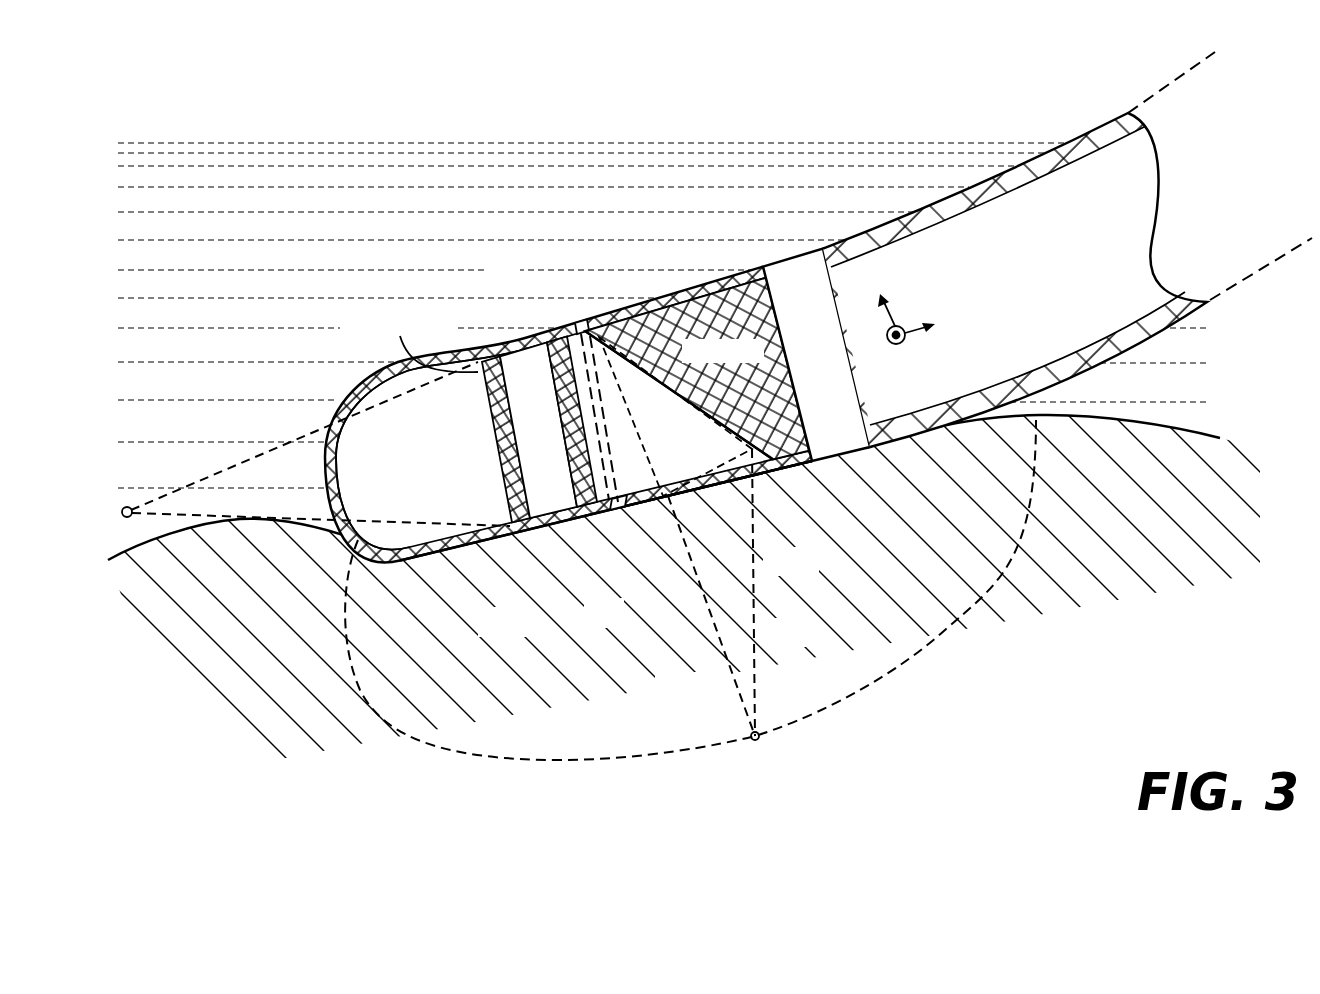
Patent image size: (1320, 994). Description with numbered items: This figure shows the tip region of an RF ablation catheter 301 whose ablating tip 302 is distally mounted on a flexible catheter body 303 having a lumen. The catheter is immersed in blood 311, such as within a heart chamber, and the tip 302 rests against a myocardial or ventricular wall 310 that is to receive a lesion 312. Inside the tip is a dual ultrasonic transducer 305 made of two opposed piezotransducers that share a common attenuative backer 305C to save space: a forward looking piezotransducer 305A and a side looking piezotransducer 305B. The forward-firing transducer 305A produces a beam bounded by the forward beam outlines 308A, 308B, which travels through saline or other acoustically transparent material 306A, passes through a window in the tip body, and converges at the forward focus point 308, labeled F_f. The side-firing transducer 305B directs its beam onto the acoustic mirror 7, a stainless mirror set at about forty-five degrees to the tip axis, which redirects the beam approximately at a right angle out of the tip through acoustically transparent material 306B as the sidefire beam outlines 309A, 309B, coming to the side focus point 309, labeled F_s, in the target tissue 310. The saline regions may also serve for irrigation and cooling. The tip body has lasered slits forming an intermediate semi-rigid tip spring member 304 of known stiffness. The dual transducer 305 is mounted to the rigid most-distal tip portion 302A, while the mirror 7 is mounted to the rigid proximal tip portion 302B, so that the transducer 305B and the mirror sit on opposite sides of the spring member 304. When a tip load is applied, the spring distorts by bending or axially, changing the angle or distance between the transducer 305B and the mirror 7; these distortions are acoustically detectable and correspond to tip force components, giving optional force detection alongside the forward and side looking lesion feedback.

The RF ablation catheter 301 is at (722, 176).
The ablating tip 302 is at (722, 207).
The rigid most-distal tip portion 302A is at (607, 537).
The rigid proximal tip portion 302B is at (633, 548).
The flexible catheter body 303 is at (1107, 92).
The tip spring member 304 is at (581, 318).
The dual ultrasonic transducer 305 is at (470, 392).
The forward looking piezotransducer 305A is at (498, 420).
The side looking piezotransducer 305B is at (577, 483).
The common attenuative backer 305C is at (537, 424).
The acoustically transparent material 306A is at (388, 490).
The acoustically transparent material 306B is at (697, 438).
The forward focus point 308 is at (286, 481).
The forward beam outline 308A is at (187, 487).
The forward beam outline 308B is at (148, 516).
The side focus point 309 is at (736, 616).
The sidefire beam outline 309A is at (724, 657).
The sidefire beam outline 309B is at (756, 616).
The myocardial or ventricular wall 310 is at (1103, 583).
The blood 311 is at (210, 298).
The lesion 312 is at (470, 757).
The acoustic mirror 7 is at (748, 285).